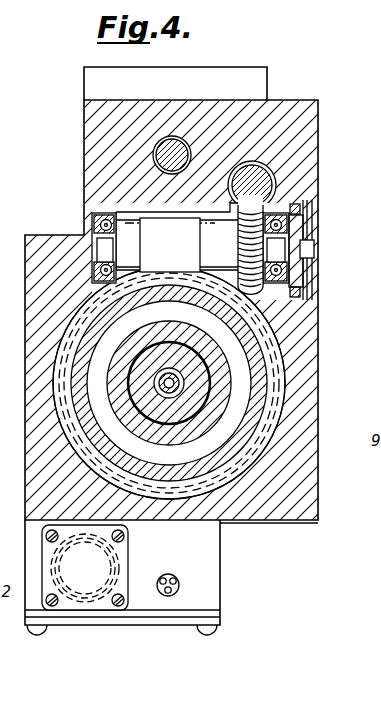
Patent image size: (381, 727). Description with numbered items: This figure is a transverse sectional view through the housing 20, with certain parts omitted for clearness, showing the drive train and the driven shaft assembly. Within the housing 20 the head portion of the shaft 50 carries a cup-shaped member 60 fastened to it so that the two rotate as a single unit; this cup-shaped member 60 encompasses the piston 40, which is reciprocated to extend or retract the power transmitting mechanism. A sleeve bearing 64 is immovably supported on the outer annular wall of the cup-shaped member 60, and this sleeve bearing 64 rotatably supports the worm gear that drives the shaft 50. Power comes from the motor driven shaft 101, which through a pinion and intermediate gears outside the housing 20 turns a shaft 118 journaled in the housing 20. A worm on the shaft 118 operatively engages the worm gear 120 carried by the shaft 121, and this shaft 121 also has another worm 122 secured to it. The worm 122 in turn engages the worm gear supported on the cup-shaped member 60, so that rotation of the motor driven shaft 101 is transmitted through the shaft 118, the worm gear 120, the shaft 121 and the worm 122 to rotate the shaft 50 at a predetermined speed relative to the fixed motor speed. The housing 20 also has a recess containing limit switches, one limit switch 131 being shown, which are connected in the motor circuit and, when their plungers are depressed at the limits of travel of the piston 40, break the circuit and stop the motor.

The housing 20 is at (297, 113).
The motor driven shaft 101 is at (170, 147).
The shaft 118 is at (258, 183).
The worm 122 is at (148, 218).
The shaft 121 is at (215, 236).
The worm gear 120 is at (254, 291).
The piston 40 is at (117, 364).
The shaft 50 is at (187, 357).
The cup-shaped member 60 is at (236, 328).
The sleeve bearing 64 is at (262, 378).
The limit switch 131 is at (97, 580).